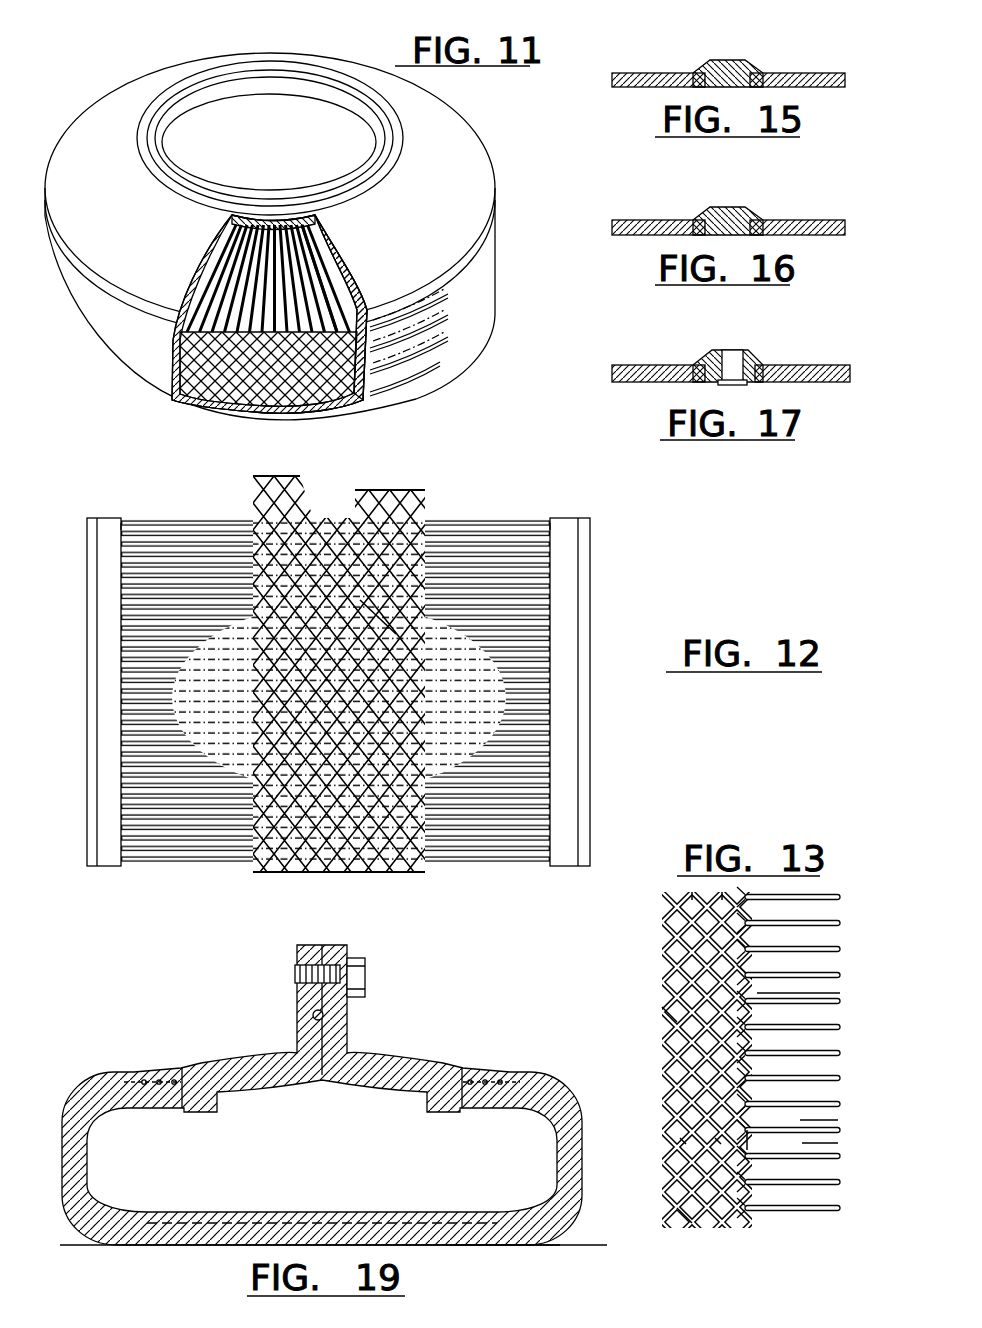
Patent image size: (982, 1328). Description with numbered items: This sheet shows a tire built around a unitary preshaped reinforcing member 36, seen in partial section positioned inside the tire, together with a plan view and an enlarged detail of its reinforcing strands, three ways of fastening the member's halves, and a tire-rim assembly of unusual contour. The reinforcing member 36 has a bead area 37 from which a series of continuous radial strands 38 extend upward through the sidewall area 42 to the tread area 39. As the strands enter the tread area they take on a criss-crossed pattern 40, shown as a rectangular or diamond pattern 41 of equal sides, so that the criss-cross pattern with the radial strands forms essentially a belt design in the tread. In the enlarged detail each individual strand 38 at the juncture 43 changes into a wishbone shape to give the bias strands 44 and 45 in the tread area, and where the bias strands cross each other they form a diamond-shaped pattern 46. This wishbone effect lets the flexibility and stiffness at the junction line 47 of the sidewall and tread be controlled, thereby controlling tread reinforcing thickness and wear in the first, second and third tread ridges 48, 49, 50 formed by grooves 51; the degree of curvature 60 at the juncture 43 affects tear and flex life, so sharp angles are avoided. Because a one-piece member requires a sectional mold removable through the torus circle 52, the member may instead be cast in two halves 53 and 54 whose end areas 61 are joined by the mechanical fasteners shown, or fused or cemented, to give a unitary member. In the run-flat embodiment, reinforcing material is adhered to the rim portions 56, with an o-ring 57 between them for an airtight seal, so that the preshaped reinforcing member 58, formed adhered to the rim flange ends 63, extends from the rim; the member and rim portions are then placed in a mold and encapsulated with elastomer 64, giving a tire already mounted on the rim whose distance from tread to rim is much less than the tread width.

In FIG. 11, the unitary preshaped reinforcing member 36 is at (286, 227).
In FIG. 11, the bead area 37 is at (263, 216).
In FIG. 12, the bead area 37 is at (575, 787).
In FIG. 11, the radial strands 38 is at (238, 267).
In FIG. 12, the radial strands 38 is at (546, 726).
In FIG. 13, the radial strands 38 is at (836, 1082).
In FIG. 11, the tread area 39 is at (221, 404).
In FIG. 12, the tread area 39 is at (283, 487).
In FIG. 13, the tread area 39 is at (677, 1208).
In FIG. 11, the criss-crossed pattern 40 is at (218, 340).
In FIG. 12, the criss-crossed pattern 40 is at (396, 500).
In FIG. 11, the diamond pattern 41 is at (326, 411).
In FIG. 12, the diamond pattern 41 is at (293, 872).
In FIG. 11, the sidewall area 42 is at (320, 267).
In FIG. 12, the sidewall area 42 is at (552, 591).
In FIG. 13, the sidewall area 42 is at (810, 1170).
In FIG. 13, the juncture 43 is at (757, 993).
In FIG. 13, the bias strand 44 is at (700, 968).
In FIG. 13, the bias strand 45 is at (690, 1010).
In FIG. 12, the diamond-shaped pattern 46 is at (378, 617).
In FIG. 13, the diamond-shaped pattern 46 is at (712, 1180).
In FIG. 11, the junction line 47 is at (356, 297).
In FIG. 12, the junction line 47 is at (427, 516).
In FIG. 13, the junction line 47 is at (747, 1140).
In FIG. 11, the first tread ridge 48 is at (383, 315).
In FIG. 11, the second tread ridge 49 is at (402, 328).
In FIG. 11, the third tread ridge 50 is at (427, 337).
In FIG. 11, the grooves 51 is at (402, 372).
In FIG. 11, the torus circle 52 is at (225, 120).
In FIG. 15, the first half of preshaped reinforcing member 53 is at (637, 73).
In FIG. 16, the first half of preshaped reinforcing member 53 is at (660, 220).
In FIG. 17, the first half of preshaped reinforcing member 53 is at (677, 365).
In FIG. 15, the second half of preshaped reinforcing member 54 is at (800, 73).
In FIG. 16, the second half of preshaped reinforcing member 54 is at (805, 220).
In FIG. 17, the second half of preshaped reinforcing member 54 is at (812, 365).
In FIG. 19, the rim portions 56 is at (203, 1083).
In FIG. 19, the o-ring 57 is at (310, 1017).
In FIG. 19, the preshaped reinforcing member 58 is at (320, 1212).
In FIG. 13, the degree of curvature 60 is at (688, 925).
In FIG. 15, the end areas 61 is at (745, 62).
In FIG. 16, the end areas 61 is at (745, 208).
In FIG. 17, the end areas 61 is at (750, 352).
In FIG. 19, the rim flange ends 63 is at (147, 1077).
In FIG. 19, the elastomer 64 is at (517, 1225).